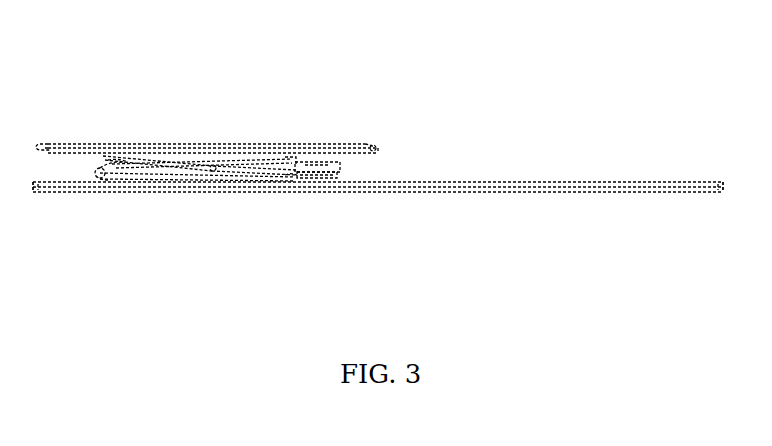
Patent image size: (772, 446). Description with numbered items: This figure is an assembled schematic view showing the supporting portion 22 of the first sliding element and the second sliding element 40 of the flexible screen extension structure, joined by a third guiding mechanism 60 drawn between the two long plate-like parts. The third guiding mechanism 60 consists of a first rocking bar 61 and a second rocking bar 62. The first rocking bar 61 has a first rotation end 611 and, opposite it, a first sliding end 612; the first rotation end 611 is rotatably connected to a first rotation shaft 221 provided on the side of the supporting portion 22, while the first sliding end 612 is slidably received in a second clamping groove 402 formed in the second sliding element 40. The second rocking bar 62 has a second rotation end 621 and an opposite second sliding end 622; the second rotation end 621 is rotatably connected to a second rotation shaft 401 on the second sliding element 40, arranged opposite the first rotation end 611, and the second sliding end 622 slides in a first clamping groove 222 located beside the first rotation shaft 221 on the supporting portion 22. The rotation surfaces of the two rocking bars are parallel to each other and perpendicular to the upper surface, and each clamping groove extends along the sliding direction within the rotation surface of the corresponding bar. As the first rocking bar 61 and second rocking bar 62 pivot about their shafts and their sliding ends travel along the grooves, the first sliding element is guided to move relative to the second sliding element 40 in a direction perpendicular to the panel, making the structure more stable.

The supporting portion 22 is at (192, 182).
The first rotation shaft 221 is at (92, 180).
The first clamping groove 222 is at (340, 178).
The second sliding element 40 is at (185, 143).
The second rotation shaft 401 is at (95, 143).
The second clamping groove 402 is at (343, 143).
The third guiding mechanism 60 is at (238, 88).
The first rocking bar 61 is at (247, 160).
The first rotation end 611 is at (113, 183).
The first sliding end 612 is at (292, 155).
The second rocking bar 62 is at (237, 178).
The second rotation end 621 is at (119, 162).
The second sliding end 622 is at (290, 180).